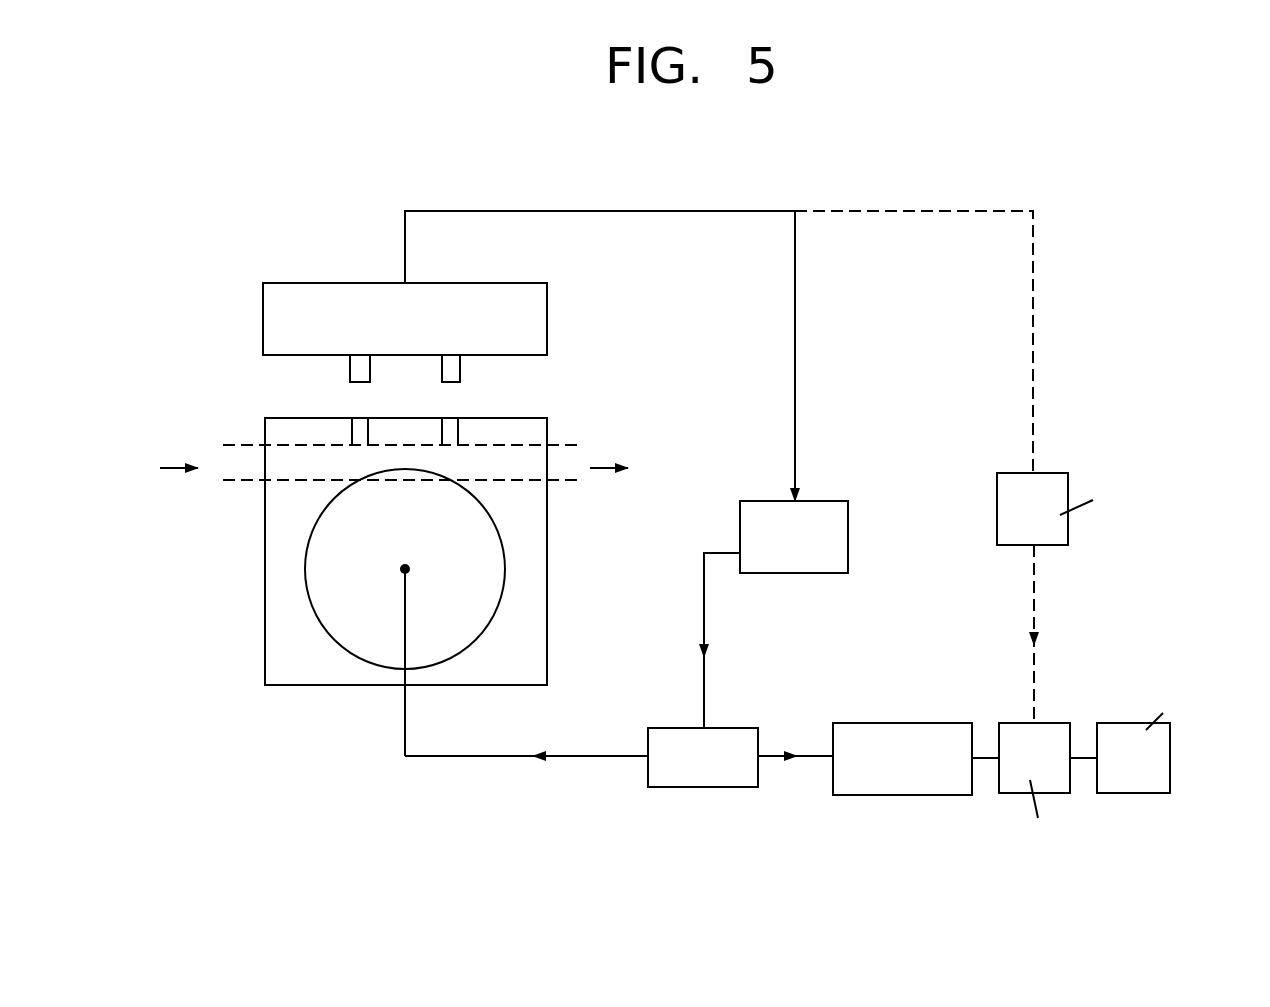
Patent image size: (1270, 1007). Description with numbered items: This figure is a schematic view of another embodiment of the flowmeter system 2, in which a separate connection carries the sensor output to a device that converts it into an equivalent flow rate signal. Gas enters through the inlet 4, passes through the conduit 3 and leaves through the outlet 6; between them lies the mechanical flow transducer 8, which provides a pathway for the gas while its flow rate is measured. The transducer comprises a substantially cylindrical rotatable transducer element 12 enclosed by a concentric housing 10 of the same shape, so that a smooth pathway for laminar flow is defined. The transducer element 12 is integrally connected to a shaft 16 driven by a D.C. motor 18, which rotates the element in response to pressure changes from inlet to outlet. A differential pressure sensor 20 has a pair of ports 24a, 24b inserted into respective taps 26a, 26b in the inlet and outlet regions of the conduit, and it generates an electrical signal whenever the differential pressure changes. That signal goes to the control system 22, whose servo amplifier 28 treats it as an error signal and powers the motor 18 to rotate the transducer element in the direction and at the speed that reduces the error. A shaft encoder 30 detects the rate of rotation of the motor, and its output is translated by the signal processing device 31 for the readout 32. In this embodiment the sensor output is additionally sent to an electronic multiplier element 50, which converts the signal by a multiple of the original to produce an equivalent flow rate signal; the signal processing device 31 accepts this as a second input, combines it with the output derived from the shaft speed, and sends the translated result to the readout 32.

The flowmeter system 2 is at (484, 192).
The conduit 3 is at (243, 458).
The inlet 4 is at (264, 468).
The outlet 6 is at (547, 463).
The mechanical flow transducer 8 is at (233, 587).
The housing 10 is at (547, 598).
The rotatable transducer element 12 is at (326, 632).
The shaft 16 is at (405, 566).
The D.C. motor 18 is at (655, 770).
The differential pressure sensor 20 is at (300, 318).
The control system 22 is at (922, 690).
The port 24a is at (360, 369).
The port 24b is at (450, 367).
The tap 26a is at (353, 433).
The tap 26b is at (450, 432).
The servo amplifier 28 is at (840, 538).
The shaft encoder 30 is at (885, 788).
The signal processing device 31 is at (1035, 800).
The readout 32 is at (1161, 737).
The electronic multiplier element 50 is at (1119, 596).